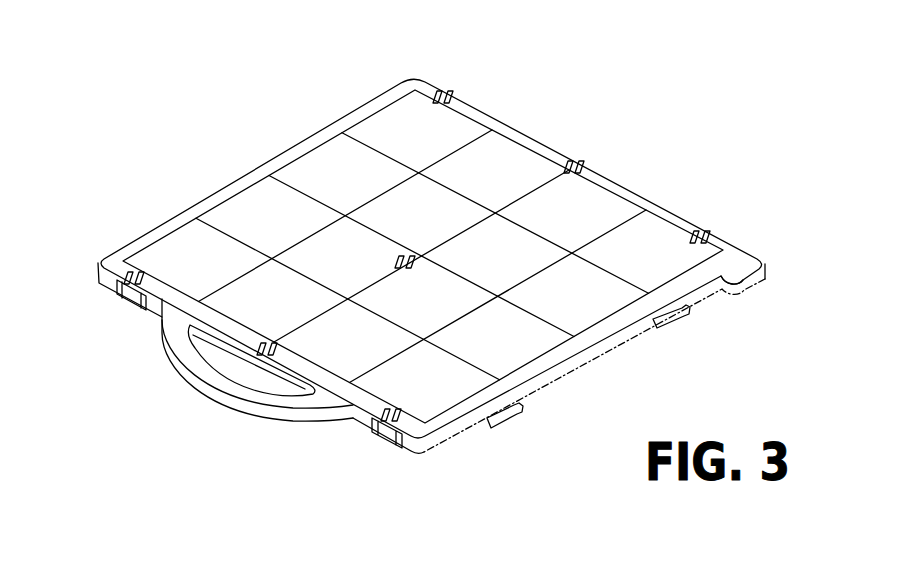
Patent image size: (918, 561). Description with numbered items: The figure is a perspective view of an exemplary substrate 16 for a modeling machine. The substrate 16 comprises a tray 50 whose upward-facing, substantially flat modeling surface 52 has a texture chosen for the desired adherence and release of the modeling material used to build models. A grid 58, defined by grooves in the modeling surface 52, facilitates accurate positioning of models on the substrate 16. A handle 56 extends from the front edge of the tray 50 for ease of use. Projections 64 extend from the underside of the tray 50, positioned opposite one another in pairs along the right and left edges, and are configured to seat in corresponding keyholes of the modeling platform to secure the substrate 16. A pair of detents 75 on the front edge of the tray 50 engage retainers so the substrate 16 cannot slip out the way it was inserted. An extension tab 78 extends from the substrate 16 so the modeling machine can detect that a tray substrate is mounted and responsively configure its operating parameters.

The substrate 16 is at (648, 142).
The tray 50 is at (498, 112).
The modeling surface 52 is at (517, 163).
The handle 56 is at (252, 402).
The grid 58 is at (640, 223).
The projections 64 is at (689, 316).
The detents 75 is at (143, 305).
The extension tab 78 is at (733, 264).